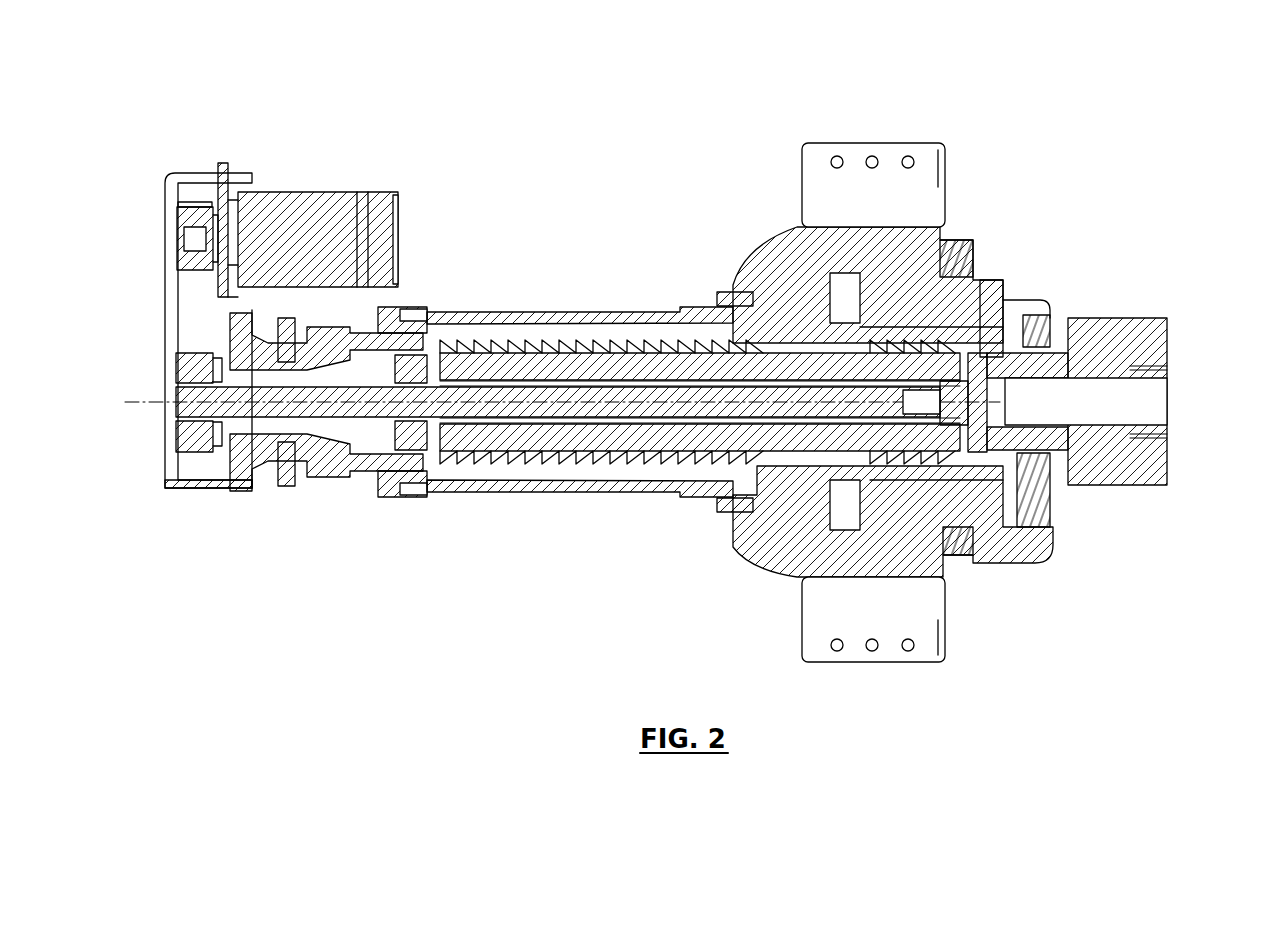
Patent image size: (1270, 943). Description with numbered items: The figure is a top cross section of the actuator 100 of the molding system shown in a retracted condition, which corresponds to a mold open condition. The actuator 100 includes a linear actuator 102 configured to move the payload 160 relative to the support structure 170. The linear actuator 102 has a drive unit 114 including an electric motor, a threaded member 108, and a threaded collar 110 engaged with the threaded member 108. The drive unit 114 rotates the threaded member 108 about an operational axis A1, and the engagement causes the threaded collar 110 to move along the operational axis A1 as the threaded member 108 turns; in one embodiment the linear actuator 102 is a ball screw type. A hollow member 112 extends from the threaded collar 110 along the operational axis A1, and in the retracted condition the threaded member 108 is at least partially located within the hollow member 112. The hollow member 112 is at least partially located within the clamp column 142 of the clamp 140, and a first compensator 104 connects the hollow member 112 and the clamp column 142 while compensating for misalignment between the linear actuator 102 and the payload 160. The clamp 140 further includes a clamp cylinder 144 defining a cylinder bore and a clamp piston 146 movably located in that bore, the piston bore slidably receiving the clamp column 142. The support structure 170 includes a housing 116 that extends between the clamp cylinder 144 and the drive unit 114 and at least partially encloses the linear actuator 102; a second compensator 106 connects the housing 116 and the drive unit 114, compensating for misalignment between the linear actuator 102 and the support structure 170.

The actuator 100 is at (575, 124).
The operational axis A1 is at (133, 405).
The linear actuator 102 is at (368, 496).
The first compensator 104 is at (978, 452).
The second compensator 106 is at (285, 462).
The threaded member 108 is at (470, 367).
The threaded collar 110 is at (363, 440).
The hollow member 112 is at (425, 442).
The drive unit 114 is at (156, 339).
The housing 116 is at (590, 310).
The clamp 140 is at (926, 334).
The clamp column 142 is at (1135, 330).
The clamp cylinder 144 is at (778, 252).
The clamp piston 146 is at (1000, 292).
The payload 160 is at (1117, 300).
The support structure 170 is at (876, 100).